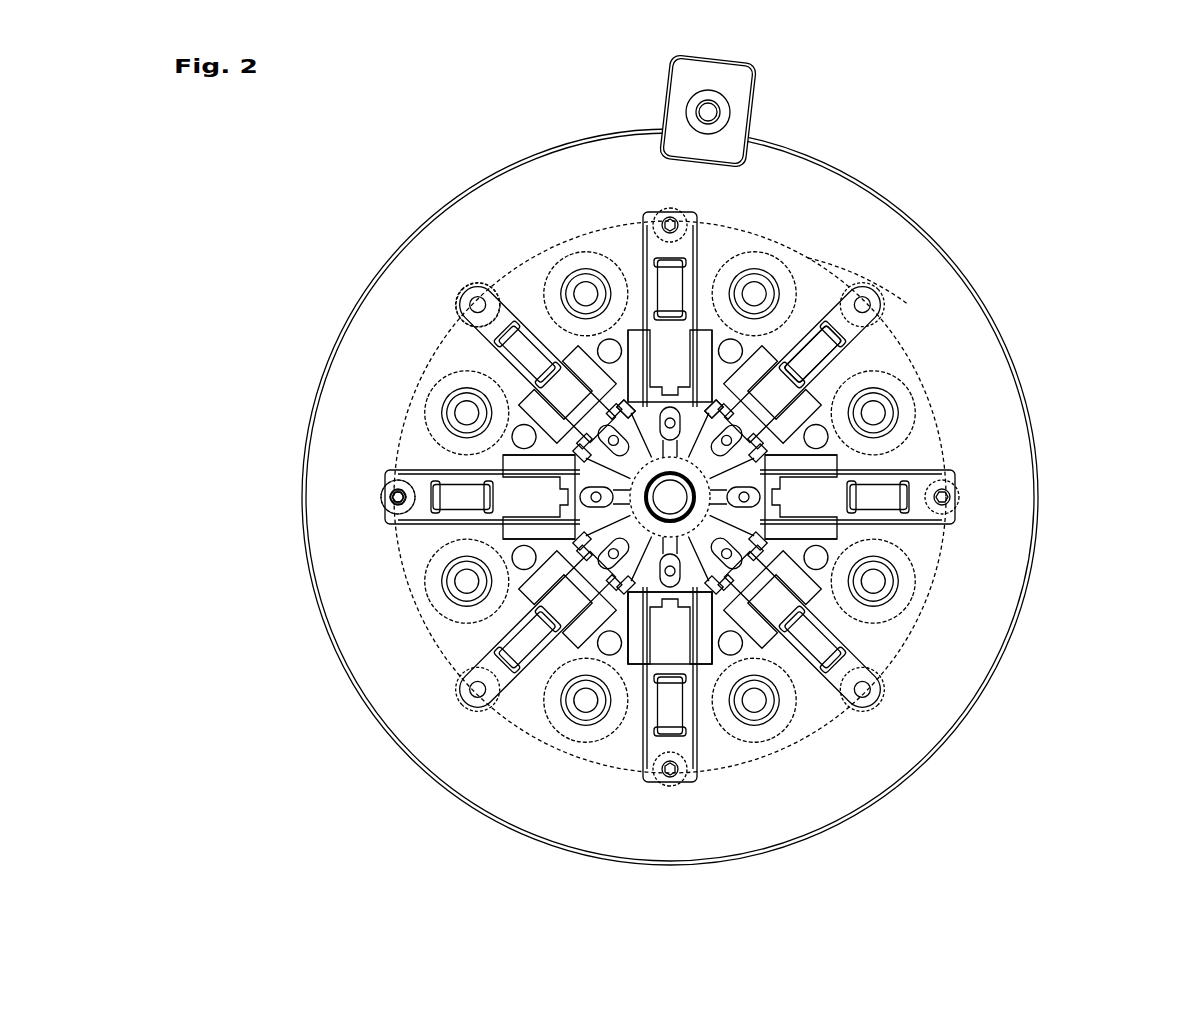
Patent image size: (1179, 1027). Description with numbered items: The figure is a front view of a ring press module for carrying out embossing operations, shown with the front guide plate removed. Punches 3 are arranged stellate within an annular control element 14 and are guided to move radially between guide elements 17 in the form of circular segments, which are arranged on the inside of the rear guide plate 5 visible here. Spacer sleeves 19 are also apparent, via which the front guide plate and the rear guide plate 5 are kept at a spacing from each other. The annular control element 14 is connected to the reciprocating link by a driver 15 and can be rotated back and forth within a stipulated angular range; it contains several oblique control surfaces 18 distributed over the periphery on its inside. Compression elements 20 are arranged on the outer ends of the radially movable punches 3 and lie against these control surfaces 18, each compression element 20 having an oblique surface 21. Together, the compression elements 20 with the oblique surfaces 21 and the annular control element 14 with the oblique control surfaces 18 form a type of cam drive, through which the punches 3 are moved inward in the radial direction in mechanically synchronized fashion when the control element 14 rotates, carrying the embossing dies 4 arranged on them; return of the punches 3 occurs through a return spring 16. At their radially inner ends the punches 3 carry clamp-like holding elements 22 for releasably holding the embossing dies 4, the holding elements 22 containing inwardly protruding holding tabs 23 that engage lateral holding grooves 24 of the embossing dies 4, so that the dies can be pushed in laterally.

The punch 3 is at (673, 250).
The embossing die 4 is at (668, 447).
The rear guide plate 5 is at (535, 258).
The annular control element 14 is at (998, 502).
The driver 15 is at (737, 110).
The return spring 16 is at (815, 350).
The guide element 17 is at (888, 352).
The oblique control surface 18 is at (452, 312).
The spacer sleeve 19 is at (905, 402).
The compression element 20 is at (390, 507).
The oblique surface 21 is at (395, 482).
The clamp-like holding element 22 is at (633, 340).
The holding tab 23 is at (640, 405).
The lateral holding groove 24 is at (682, 612).